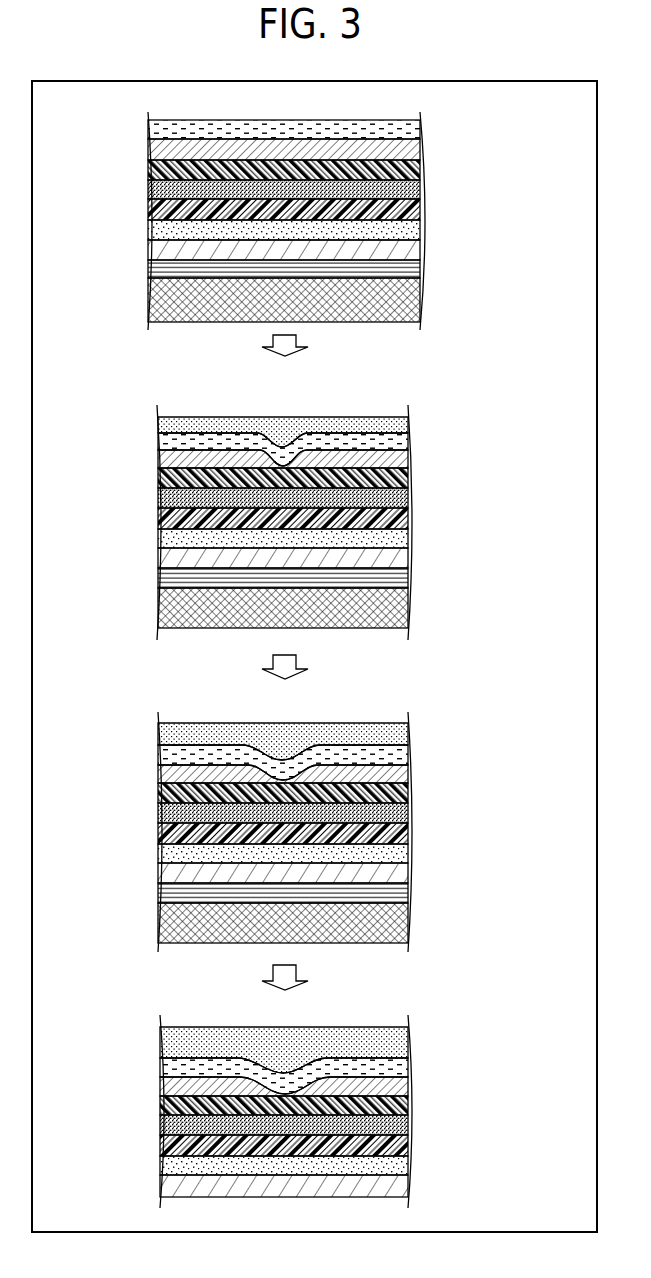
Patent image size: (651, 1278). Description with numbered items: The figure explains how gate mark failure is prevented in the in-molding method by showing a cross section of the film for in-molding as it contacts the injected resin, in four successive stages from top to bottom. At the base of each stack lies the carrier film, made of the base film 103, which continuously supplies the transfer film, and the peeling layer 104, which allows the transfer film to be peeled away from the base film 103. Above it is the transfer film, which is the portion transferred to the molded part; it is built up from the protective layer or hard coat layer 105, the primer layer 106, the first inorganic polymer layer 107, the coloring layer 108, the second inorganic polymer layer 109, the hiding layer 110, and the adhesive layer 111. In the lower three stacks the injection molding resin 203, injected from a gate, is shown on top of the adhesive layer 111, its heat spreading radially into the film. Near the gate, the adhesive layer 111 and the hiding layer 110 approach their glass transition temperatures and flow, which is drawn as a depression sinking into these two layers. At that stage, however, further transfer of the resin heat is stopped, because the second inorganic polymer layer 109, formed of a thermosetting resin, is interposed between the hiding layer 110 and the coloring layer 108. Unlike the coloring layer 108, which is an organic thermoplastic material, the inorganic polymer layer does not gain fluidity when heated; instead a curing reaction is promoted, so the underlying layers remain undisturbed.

The base film 103 is at (156, 300).
The peeling layer 104 is at (156, 269).
The protective layer or hard coat layer 105 is at (156, 250).
The primer layer 106 is at (156, 230).
The first inorganic polymer layer 107 is at (156, 210).
The coloring layer 108 is at (156, 190).
The second inorganic polymer layer 109 is at (156, 170).
The hiding layer 110 is at (156, 150).
The adhesive layer 111 is at (156, 130).
The injection molding resin 203 is at (226, 427).